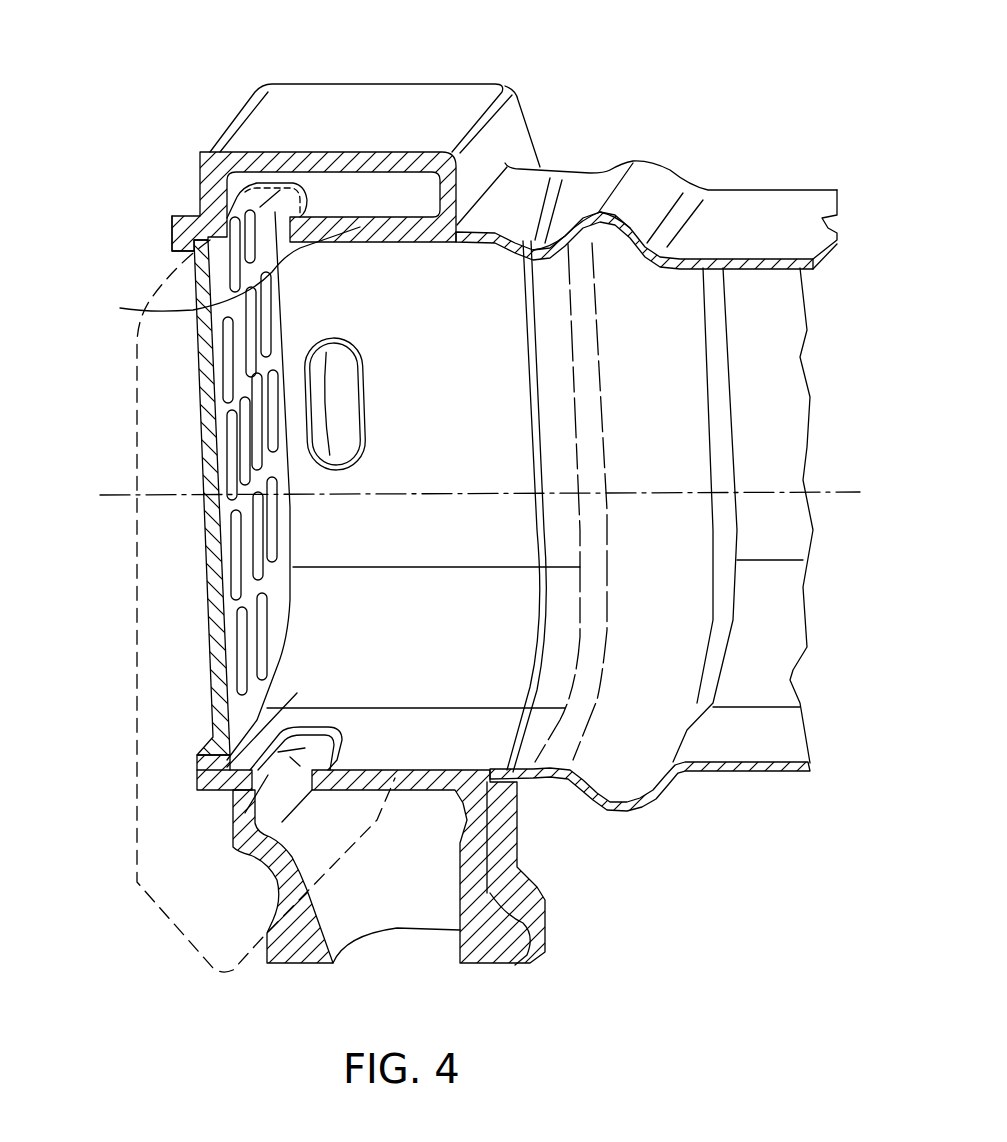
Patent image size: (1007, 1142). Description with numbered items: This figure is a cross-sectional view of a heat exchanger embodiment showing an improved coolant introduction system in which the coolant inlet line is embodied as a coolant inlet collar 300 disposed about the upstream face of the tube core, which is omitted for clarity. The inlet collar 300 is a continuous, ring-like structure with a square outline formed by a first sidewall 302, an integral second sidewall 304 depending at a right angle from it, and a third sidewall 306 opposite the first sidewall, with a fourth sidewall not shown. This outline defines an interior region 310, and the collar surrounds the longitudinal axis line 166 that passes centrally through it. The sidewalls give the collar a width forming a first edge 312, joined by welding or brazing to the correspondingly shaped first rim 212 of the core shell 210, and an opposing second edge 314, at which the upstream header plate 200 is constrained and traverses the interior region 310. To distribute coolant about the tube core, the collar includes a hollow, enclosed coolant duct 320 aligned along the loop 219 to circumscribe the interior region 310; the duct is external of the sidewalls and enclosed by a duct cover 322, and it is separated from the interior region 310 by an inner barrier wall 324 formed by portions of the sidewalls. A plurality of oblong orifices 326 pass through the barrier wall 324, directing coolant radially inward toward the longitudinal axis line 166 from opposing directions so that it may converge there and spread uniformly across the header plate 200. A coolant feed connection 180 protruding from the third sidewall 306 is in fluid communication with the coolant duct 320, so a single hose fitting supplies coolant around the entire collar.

The coolant inlet collar 300 is at (503, 82).
The first sidewall 302 is at (525, 167).
The second sidewall 304 is at (490, 627).
The third sidewall 306 is at (513, 779).
The interior region 310 is at (338, 600).
The first edge 312 is at (528, 331).
The second edge 314 is at (172, 238).
The coolant duct 320 is at (368, 182).
The duct cover 322 is at (350, 120).
The inner barrier wall 324 is at (120, 308).
The oblong orifices 326 is at (268, 206).
The upstream header plate 200 is at (203, 457).
The core shell 210 is at (747, 228).
The first rim 212 is at (536, 345).
The longitudinal axis line 166 is at (187, 497).
The coolant feed connection 180 is at (487, 943).
The loop 219 is at (137, 597).